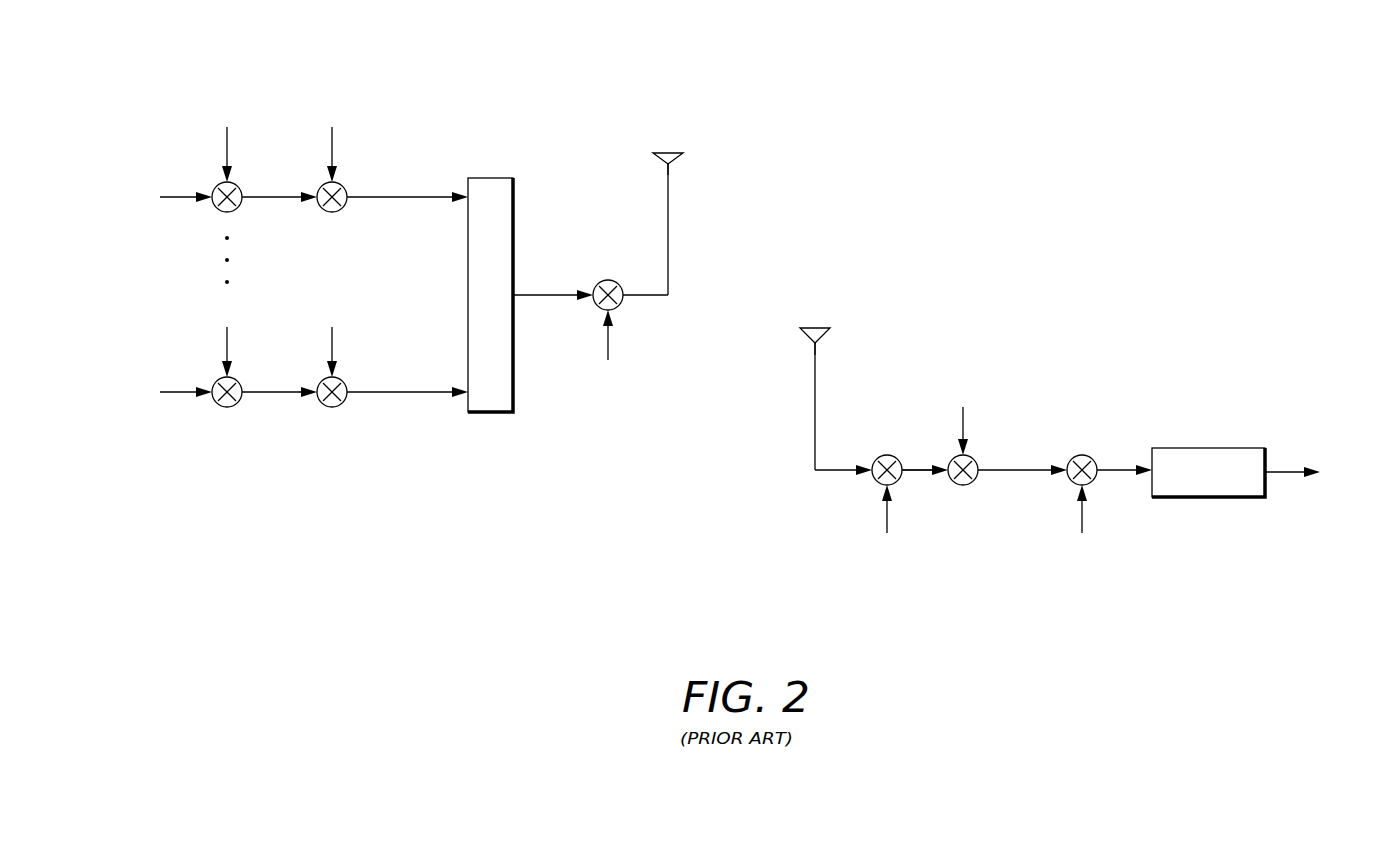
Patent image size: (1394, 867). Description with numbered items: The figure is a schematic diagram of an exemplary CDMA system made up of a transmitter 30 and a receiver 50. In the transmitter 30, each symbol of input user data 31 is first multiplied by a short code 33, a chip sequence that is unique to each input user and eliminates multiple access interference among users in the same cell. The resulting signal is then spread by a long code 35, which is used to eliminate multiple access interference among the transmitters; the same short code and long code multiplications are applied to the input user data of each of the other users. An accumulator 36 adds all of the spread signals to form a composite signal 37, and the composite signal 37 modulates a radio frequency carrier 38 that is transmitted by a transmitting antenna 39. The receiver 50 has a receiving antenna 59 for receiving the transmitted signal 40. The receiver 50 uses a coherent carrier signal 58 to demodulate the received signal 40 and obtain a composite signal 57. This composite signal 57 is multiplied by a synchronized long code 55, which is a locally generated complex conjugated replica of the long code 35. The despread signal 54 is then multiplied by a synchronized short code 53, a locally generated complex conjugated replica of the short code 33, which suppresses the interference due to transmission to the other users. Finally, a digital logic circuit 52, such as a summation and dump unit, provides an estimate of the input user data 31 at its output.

The transmitter 30 is at (392, 470).
The input user data 31 is at (118, 174).
The short code 33 is at (228, 99).
The long code 35 is at (335, 80).
The accumulator 36 is at (491, 178).
The composite signal 37 is at (547, 293).
The radio frequency carrier 38 is at (603, 418).
The transmitting antenna 39 is at (652, 153).
The signal 40 is at (658, 148).
The receiver 50 is at (1072, 348).
The digital logic circuit 52 is at (1208, 448).
The short code 53 is at (1082, 566).
The despread signal 54 is at (1021, 468).
The long code 55 is at (966, 377).
The composite signal 57 is at (913, 468).
The carrier signal 58 is at (882, 590).
The receiving antenna 59 is at (832, 330).